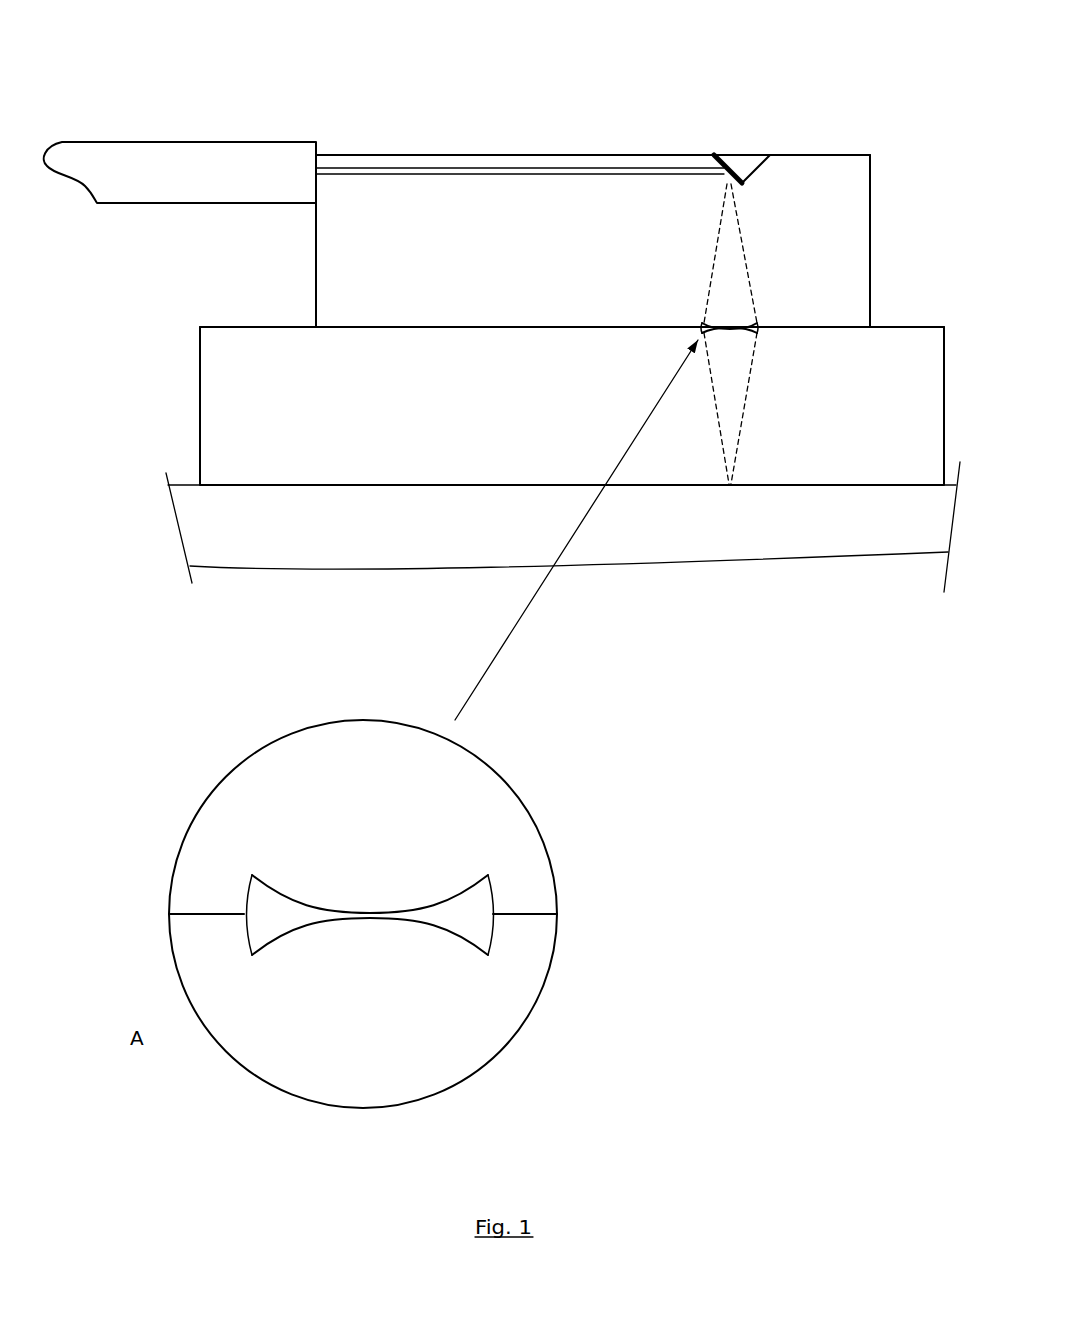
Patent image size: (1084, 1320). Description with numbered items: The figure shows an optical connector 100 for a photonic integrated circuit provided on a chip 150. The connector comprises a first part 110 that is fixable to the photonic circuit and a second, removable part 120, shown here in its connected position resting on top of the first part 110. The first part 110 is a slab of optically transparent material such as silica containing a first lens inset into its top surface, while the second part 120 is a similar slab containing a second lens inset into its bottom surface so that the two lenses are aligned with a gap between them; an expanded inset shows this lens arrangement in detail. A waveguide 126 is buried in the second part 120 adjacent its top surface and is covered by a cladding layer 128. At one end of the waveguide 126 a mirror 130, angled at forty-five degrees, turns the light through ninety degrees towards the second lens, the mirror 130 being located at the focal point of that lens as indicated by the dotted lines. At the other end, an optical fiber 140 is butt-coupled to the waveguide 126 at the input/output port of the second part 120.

The optical connector 100 is at (378, 76).
The first part 110 is at (175, 377).
The second part 120 is at (872, 127).
The waveguide 126 is at (581, 176).
The cladding layer 128 is at (633, 162).
The mirror 130 is at (722, 155).
The optical fiber 140 is at (222, 148).
The chip 150 is at (815, 542).